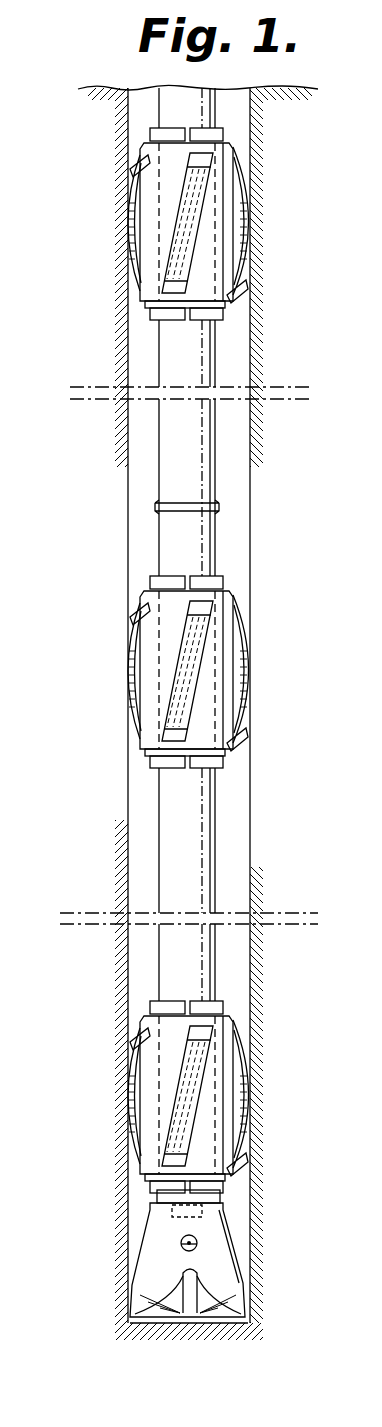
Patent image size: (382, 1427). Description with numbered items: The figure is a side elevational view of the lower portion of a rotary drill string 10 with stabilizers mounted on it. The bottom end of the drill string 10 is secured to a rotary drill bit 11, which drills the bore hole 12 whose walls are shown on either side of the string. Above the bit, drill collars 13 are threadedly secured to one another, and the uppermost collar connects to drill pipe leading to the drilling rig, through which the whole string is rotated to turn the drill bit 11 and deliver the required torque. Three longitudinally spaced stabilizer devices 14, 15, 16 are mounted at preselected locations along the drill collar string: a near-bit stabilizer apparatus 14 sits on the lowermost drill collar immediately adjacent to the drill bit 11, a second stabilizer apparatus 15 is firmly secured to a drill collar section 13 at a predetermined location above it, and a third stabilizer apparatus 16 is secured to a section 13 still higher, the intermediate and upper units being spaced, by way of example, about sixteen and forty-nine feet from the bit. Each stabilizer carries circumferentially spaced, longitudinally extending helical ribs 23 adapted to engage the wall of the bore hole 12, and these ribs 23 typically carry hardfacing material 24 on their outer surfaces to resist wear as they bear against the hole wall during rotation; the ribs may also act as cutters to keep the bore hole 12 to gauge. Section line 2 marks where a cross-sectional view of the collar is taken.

The section line 2- 2 is at (186, 527).
The drill string 10 is at (218, 373).
The rotary drill bit 11 is at (220, 1270).
The bore hole 12 is at (247, 778).
The drill collars 13 is at (203, 480).
The near-bit stabilizer apparatus 14 is at (137, 1160).
The second stabilizer apparatus 15 is at (137, 588).
The third stabilizer apparatus 16 is at (240, 168).
The helical ribs 23 is at (138, 208).
The hardfacing material 24 is at (190, 225).